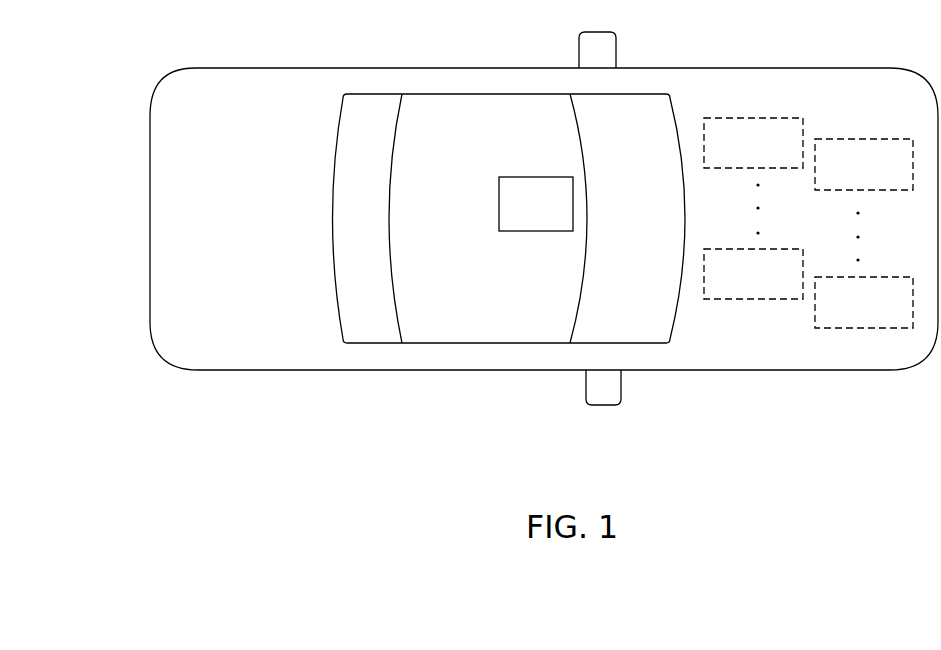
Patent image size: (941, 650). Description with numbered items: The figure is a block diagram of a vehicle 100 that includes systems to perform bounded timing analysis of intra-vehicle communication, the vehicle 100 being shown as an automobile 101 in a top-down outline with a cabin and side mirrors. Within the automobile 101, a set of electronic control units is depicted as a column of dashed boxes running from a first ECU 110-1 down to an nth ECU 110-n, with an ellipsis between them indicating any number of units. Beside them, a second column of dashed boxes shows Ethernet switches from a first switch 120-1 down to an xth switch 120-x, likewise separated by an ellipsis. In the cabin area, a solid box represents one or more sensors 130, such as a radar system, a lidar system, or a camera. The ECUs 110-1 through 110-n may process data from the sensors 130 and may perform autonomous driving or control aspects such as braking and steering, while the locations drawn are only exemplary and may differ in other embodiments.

The vehicle 100 is at (519, 214).
The automobile 101 is at (240, 67).
The ECU 110-1 is at (753, 143).
The ECU 110-n is at (753, 274).
The Ethernet switch 120-1 is at (864, 164).
The Ethernet switch 120-x is at (864, 302).
The sensor 130 is at (536, 204).